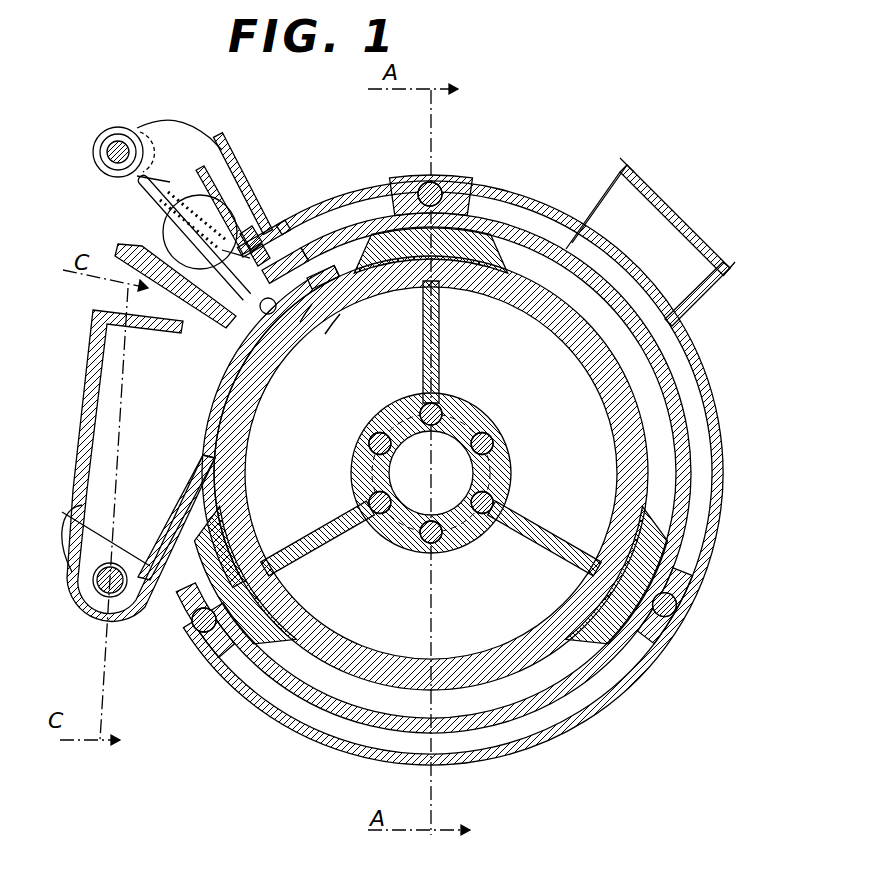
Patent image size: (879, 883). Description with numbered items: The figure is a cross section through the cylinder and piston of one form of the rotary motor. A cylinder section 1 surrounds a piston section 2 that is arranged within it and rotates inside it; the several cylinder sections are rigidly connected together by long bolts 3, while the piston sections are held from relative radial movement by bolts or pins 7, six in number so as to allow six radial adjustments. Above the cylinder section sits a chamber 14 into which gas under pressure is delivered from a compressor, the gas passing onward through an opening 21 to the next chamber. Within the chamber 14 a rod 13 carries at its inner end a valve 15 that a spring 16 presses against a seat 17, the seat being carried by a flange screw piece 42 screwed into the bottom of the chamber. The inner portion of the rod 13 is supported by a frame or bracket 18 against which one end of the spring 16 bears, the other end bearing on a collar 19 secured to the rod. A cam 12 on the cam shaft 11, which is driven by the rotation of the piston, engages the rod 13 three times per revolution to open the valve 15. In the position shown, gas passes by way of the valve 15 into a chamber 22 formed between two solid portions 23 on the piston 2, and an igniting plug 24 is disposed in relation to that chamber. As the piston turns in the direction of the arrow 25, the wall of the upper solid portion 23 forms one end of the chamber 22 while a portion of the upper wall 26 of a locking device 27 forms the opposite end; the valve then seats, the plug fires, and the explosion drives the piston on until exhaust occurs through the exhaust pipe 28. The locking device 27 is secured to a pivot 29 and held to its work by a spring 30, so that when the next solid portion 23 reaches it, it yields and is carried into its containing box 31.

The cylinder section 1 is at (690, 470).
The piston section 2 is at (617, 413).
The long bolts 3 is at (445, 190).
The bolts or pins 7 is at (488, 441).
The cam shaft 11 is at (108, 151).
The cam 12 is at (112, 127).
The rod 13 is at (148, 187).
The chamber 14 is at (225, 182).
The valve 15 is at (262, 281).
The spring 16 is at (200, 232).
The seat 17 is at (295, 250).
The frame or bracket 18 is at (248, 218).
The collar 19 is at (157, 226).
The opening 21 is at (185, 226).
The chamber 22 is at (329, 267).
The solid portions 23 is at (500, 228).
The igniting plug 24 is at (324, 335).
The arrow 25 is at (304, 326).
The upper wall 26 is at (198, 346).
The locking device 27 is at (194, 498).
The exhaust pipe 28 is at (650, 242).
The pivot 29 is at (104, 596).
The spring 30 is at (77, 570).
The containing box 31 is at (93, 390).
The flange screw piece 42 is at (293, 196).